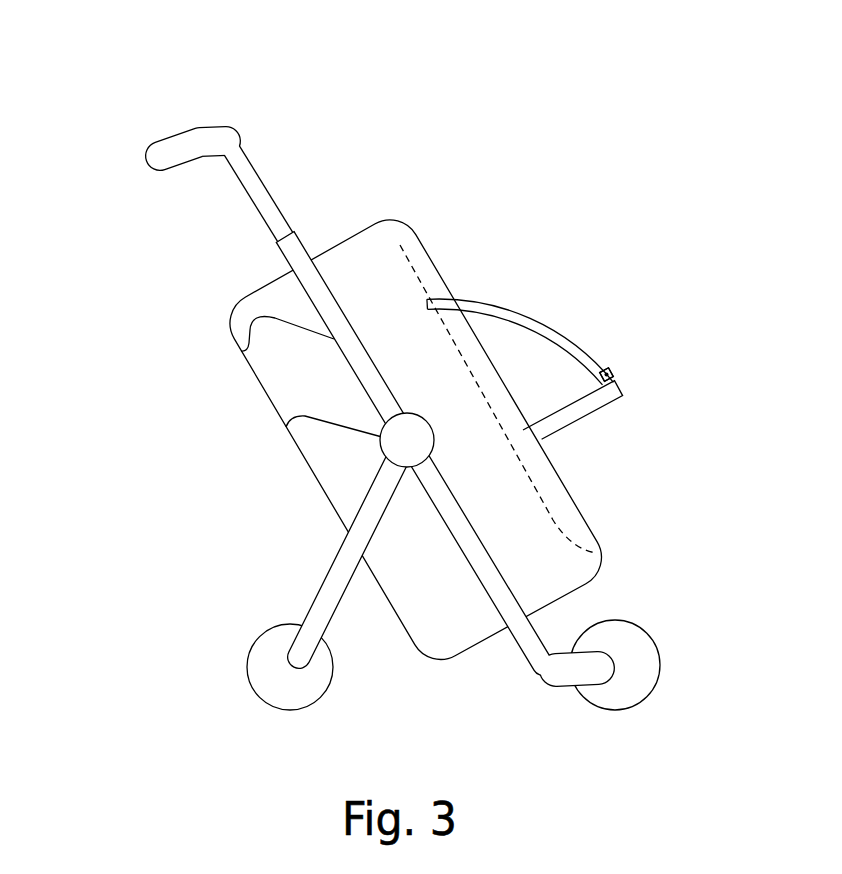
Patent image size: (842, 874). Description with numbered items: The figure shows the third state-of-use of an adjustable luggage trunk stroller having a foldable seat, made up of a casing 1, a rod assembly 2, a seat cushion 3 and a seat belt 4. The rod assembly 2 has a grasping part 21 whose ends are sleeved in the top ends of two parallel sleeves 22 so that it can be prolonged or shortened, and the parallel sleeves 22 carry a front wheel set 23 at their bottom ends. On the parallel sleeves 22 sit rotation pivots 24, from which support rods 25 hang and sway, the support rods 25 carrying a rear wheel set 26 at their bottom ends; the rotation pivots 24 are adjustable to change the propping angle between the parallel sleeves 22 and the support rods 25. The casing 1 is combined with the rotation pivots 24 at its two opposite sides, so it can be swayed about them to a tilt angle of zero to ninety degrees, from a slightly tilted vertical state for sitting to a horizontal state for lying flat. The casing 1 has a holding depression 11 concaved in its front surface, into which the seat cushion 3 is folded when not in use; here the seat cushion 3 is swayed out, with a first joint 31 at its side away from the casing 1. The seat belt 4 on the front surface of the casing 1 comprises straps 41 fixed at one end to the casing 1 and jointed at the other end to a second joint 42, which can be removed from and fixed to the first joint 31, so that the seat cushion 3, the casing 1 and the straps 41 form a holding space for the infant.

The casing 1 is at (353, 232).
The holding depression 11 is at (413, 272).
The rod assembly 2 is at (214, 258).
The grasping part 21 is at (196, 126).
The parallel sleeves 22 is at (245, 358).
The front wheel set 23 is at (650, 637).
The rotation pivots 24 is at (286, 441).
The support rods 25 is at (328, 567).
The rear wheel set 26 is at (248, 673).
The seat cushion 3 is at (582, 412).
The first joint 31 is at (612, 368).
The seat belt 4 is at (616, 281).
The straps 41 is at (527, 305).
The second joint 42 is at (607, 375).